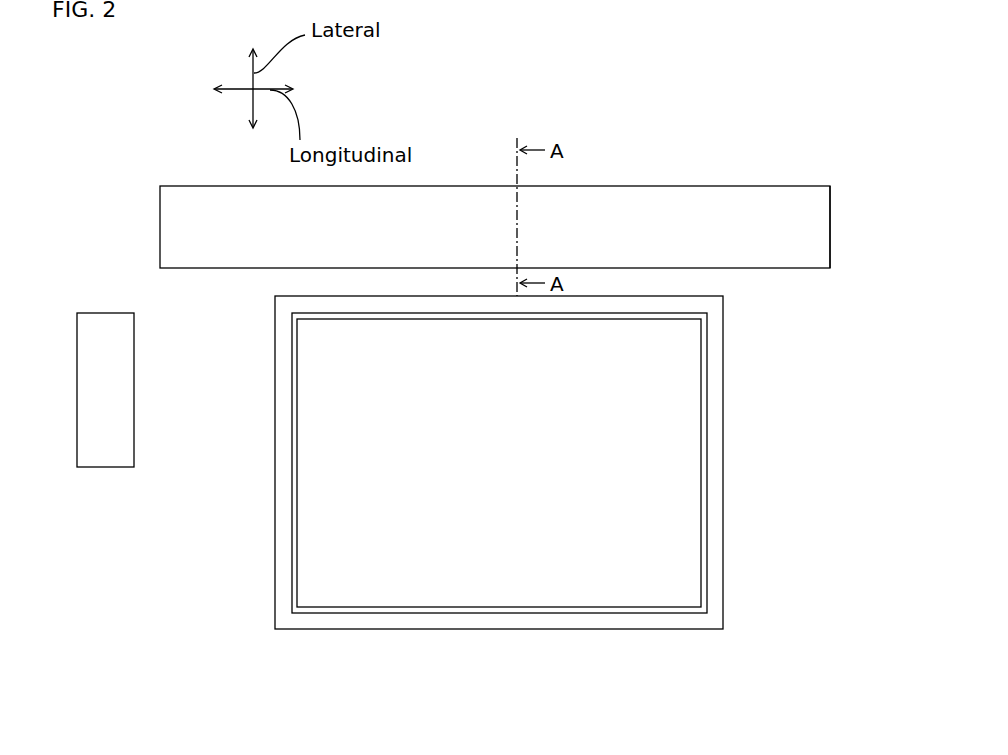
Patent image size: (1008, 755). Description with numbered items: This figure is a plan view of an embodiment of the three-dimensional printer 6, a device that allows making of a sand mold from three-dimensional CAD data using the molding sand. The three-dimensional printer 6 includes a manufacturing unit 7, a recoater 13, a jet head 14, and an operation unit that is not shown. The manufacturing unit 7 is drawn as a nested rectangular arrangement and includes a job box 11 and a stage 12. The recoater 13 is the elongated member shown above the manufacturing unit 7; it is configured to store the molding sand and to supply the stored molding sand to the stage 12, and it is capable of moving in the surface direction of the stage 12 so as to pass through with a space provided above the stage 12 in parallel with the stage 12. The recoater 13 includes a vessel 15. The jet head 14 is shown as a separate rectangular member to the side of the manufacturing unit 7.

The 3D printer 6 is at (525, 713).
The manufacturing unit 7 is at (727, 449).
The job box 11 is at (650, 624).
The stage 12 is at (664, 543).
The recoater 13 is at (733, 200).
The jet head 14 is at (90, 363).
The vessel 15 is at (807, 211).